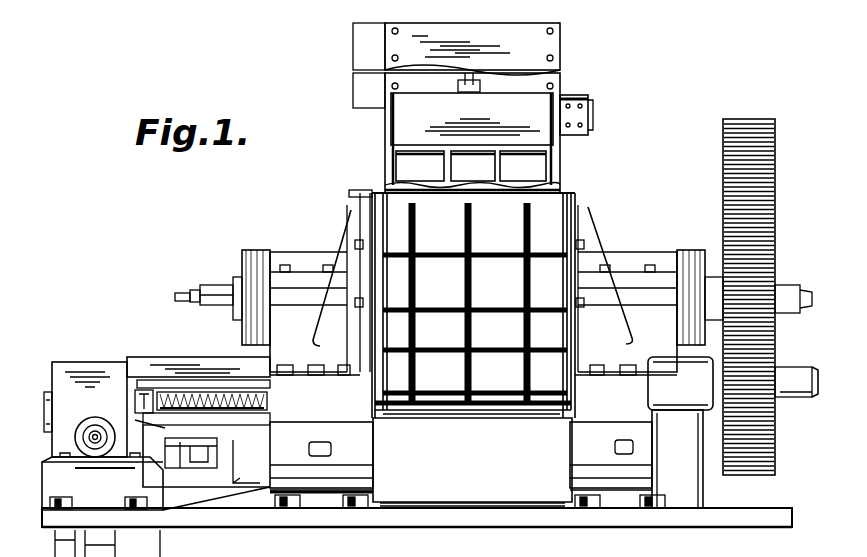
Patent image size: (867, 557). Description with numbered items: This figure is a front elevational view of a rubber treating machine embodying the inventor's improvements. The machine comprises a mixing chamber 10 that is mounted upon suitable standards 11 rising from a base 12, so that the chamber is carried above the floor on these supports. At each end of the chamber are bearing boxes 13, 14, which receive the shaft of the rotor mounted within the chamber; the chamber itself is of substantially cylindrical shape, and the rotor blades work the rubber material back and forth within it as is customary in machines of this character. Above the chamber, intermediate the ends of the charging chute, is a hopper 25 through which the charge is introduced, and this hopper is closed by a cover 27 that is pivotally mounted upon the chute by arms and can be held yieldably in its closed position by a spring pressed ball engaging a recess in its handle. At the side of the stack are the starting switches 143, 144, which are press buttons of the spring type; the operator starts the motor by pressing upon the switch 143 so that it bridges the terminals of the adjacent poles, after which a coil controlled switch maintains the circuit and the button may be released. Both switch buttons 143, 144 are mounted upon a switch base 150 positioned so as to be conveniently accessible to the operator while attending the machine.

The mixing chamber 10 is at (395, 223).
The standards 11 is at (365, 460).
The base 12 is at (440, 518).
The bearing box 13 is at (298, 258).
The bearing box 14 is at (645, 258).
The hopper 25 is at (415, 163).
The cover 27 is at (456, 108).
The starting switch 143 is at (568, 96).
The starting switch 144 is at (570, 127).
The switch base 150 is at (592, 97).